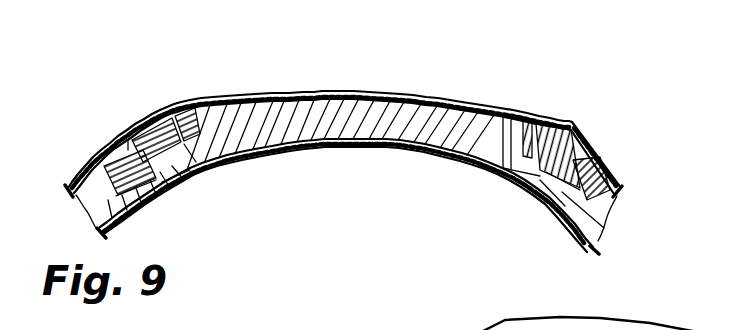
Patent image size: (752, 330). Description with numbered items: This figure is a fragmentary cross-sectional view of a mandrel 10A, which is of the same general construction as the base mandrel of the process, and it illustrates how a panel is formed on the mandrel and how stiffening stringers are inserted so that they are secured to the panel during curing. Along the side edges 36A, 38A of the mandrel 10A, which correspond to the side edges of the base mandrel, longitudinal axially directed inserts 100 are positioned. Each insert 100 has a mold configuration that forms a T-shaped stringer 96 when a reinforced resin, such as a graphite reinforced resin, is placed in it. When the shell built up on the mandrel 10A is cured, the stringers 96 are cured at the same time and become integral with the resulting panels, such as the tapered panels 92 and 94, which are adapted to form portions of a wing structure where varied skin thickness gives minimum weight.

The panel 92 is at (343, 93).
The mandrel 10A is at (357, 123).
The side edge 36A is at (134, 124).
The side edge 38A is at (566, 121).
The panel 94 is at (607, 163).
The T-shaped stringer 96 is at (186, 145).
The insert 100 is at (166, 184).